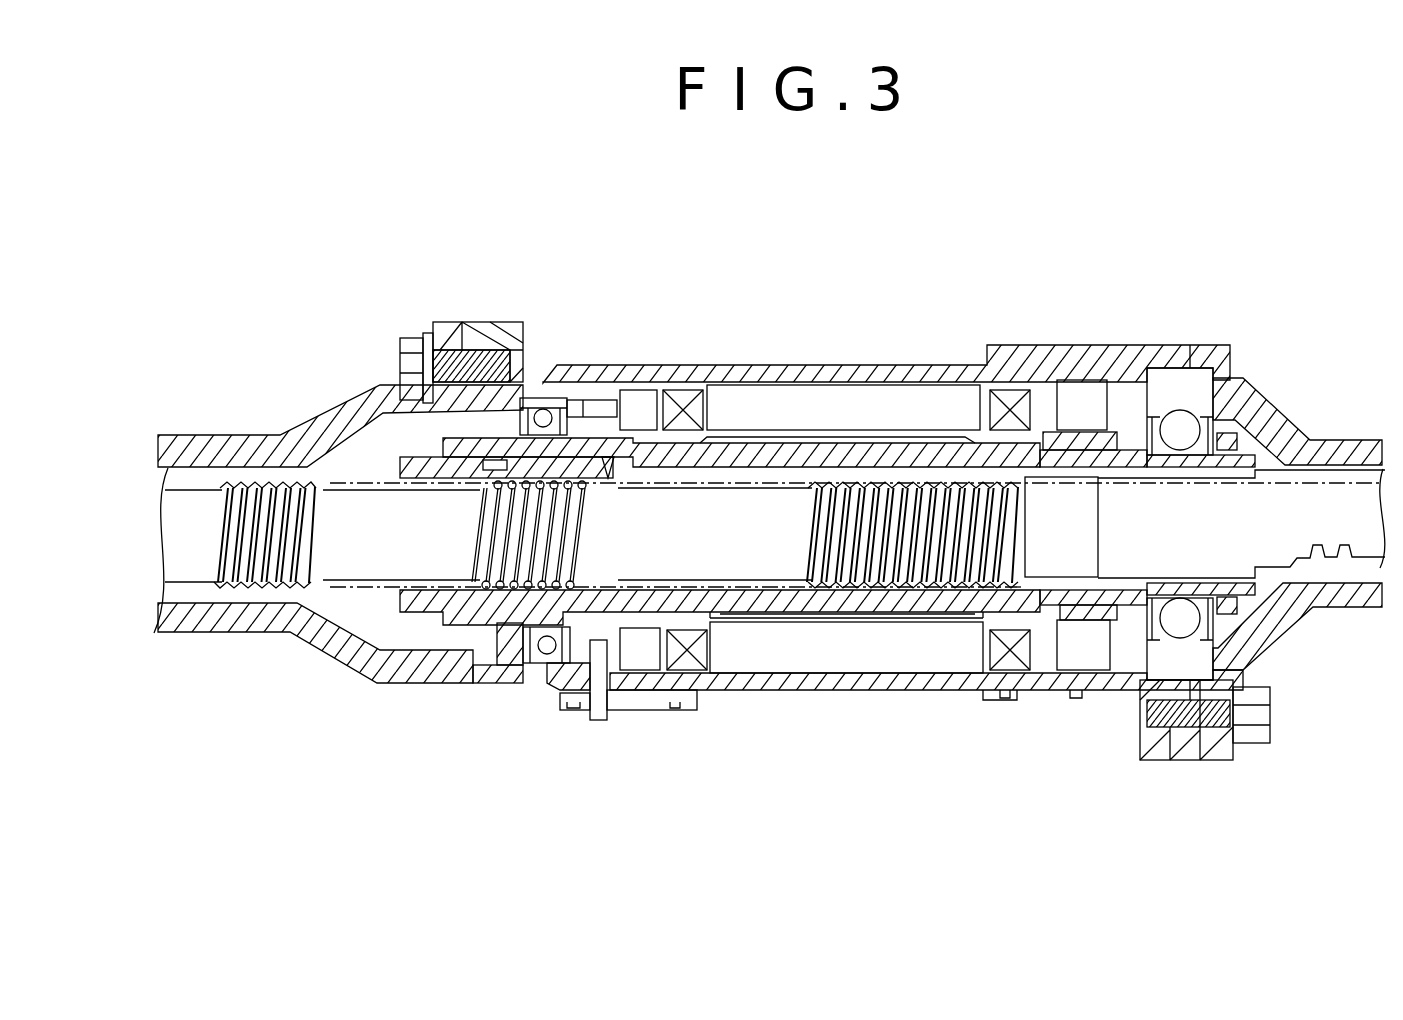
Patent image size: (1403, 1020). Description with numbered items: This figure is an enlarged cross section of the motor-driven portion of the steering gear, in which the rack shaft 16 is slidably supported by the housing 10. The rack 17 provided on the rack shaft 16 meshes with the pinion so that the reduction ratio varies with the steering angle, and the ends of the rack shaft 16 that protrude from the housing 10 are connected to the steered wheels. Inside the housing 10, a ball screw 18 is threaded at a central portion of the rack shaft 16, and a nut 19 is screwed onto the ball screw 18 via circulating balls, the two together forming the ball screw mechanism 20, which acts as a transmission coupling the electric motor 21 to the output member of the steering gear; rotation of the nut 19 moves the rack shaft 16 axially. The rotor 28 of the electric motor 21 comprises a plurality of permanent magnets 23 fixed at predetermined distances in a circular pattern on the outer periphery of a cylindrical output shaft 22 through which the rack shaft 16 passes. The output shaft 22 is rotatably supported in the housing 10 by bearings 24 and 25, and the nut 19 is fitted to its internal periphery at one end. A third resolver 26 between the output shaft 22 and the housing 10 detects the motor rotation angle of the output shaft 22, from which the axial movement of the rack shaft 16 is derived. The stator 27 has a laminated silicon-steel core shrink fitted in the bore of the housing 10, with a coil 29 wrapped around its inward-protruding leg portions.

The housing 10 is at (962, 368).
The rack shaft 16 is at (1336, 505).
The rack 17 is at (1333, 612).
The ball screw 18 is at (583, 550).
The nut 19 is at (503, 607).
The ball screw mechanism 20 is at (472, 637).
The electric motor 21 is at (893, 368).
The output shaft 22 is at (732, 602).
The permanent magnets 23 is at (890, 618).
The bearing 24 is at (560, 712).
The bearing 25 is at (1177, 625).
The third resolver 26 is at (1077, 657).
The stator 27 is at (745, 368).
The rotor 28 is at (838, 647).
The coil 29 is at (682, 385).